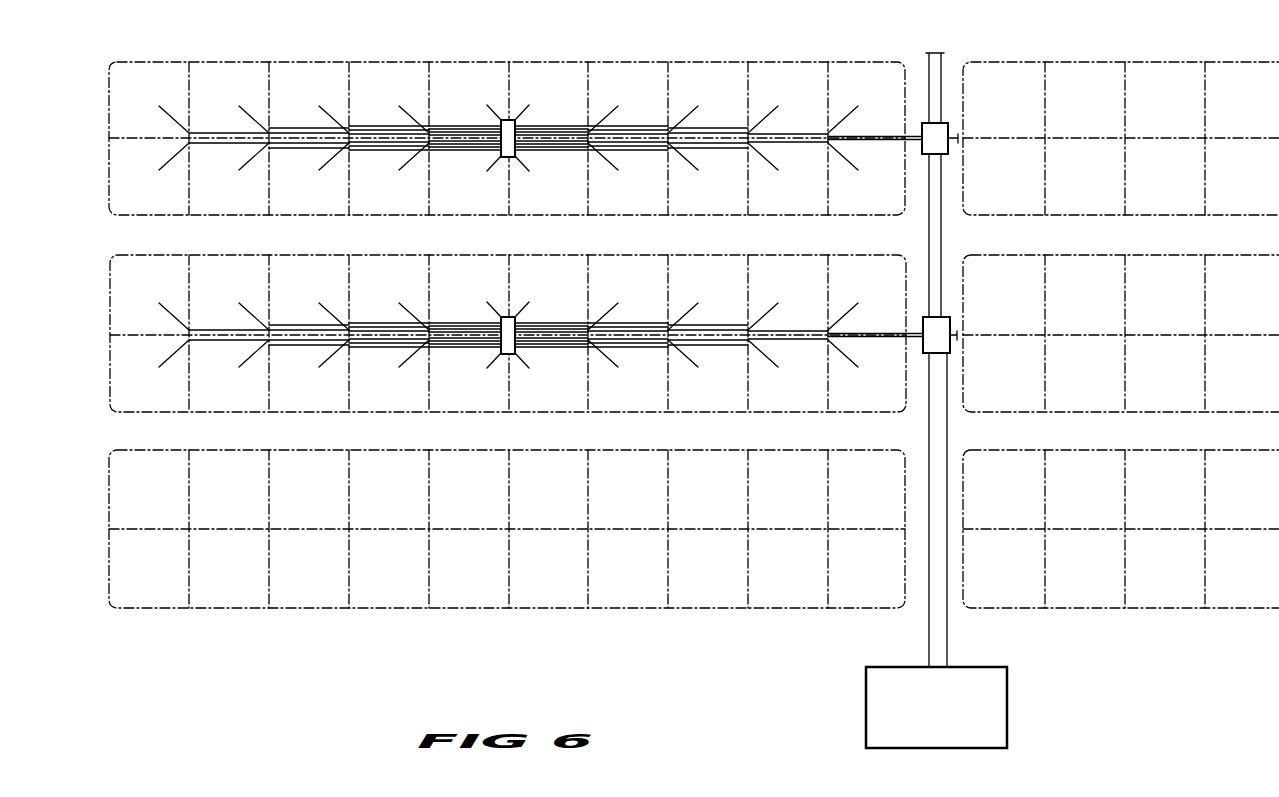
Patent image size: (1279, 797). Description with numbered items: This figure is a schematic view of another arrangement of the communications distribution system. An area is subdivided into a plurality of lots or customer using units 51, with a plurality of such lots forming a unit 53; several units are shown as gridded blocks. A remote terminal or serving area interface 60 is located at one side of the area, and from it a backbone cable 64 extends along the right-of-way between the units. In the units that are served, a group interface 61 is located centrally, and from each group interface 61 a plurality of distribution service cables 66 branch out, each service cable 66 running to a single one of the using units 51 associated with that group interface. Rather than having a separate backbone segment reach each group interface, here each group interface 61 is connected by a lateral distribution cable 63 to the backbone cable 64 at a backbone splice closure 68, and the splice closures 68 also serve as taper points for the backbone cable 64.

The using unit 51 is at (482, 605).
The unit 53 is at (608, 61).
The remote terminal 60 is at (1007, 717).
The group interface 61 is at (512, 120).
The lateral distribution cable 63 is at (852, 137).
The backbone cable 64 is at (947, 444).
The distribution service cable 66 is at (613, 127).
The backbone splice closure 68 is at (920, 127).